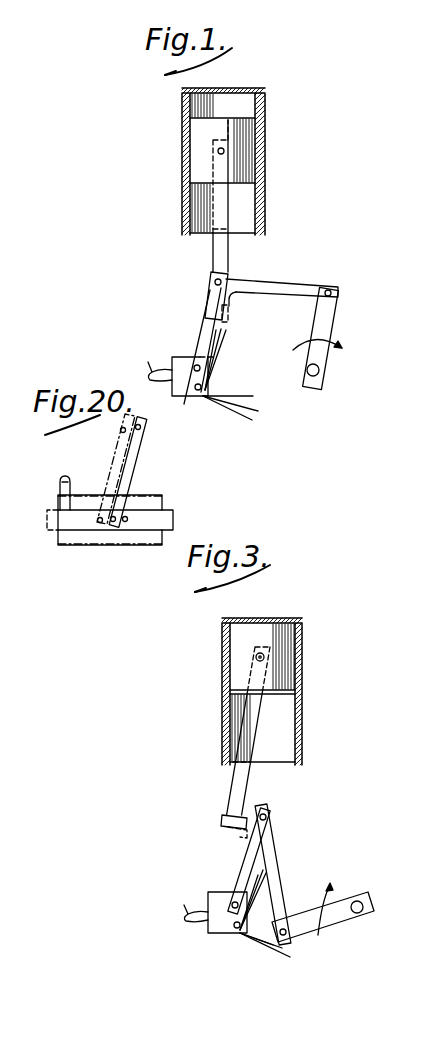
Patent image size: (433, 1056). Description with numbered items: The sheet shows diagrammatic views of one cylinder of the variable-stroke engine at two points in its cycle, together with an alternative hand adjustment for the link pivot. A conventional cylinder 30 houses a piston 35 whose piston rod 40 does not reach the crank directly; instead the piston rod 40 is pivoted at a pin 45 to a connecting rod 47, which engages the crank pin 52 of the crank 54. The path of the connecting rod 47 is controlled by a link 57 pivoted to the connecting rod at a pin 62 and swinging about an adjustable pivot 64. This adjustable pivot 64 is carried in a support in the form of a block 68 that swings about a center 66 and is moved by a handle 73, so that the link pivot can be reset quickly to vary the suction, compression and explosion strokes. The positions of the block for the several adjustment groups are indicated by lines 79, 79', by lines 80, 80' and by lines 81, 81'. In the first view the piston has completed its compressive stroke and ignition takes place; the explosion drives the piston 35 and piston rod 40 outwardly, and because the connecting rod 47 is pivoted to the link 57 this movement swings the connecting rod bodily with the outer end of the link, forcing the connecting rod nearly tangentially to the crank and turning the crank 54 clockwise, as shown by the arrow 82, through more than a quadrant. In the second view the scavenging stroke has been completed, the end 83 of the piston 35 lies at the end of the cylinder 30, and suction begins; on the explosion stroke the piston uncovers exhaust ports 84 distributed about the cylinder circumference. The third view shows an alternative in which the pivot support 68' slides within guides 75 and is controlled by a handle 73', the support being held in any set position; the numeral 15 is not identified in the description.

In FIG. 1, the cylinder 30 is at (258, 100).
In FIG. 3, the cylinder 30 is at (296, 702).
In FIG. 1, the piston 35 is at (245, 148).
In FIG. 3, the piston 35 is at (300, 656).
In FIG. 1, the exhaust ports 84 is at (258, 186).
In FIG. 3, the exhaust ports 84 is at (300, 718).
In FIG. 1, the piston rod 40 is at (214, 250).
In FIG. 3, the piston rod 40 is at (238, 772).
In FIG. 1, the pin 62 is at (212, 285).
In FIG. 3, the pin 62 is at (268, 817).
In FIG. 1, the connecting rod 47 is at (276, 283).
In FIG. 3, the connecting rod 47 is at (277, 862).
In FIG. 1, the pin 45 is at (229, 312).
In FIG. 3, the pin 45 is at (228, 827).
In FIG. 1, the crank pin 52 is at (335, 291).
In FIG. 3, the crank pin 52 is at (292, 938).
In FIG. 1, the crank 54 is at (325, 320).
In FIG. 3, the crank 54 is at (312, 920).
In FIG. 1, the arrows 82 is at (309, 356).
In FIG. 3, the arrows 82 is at (337, 895).
In FIG. 1, the link 57 is at (207, 333).
In FIG. 3, the link 57 is at (250, 855).
In FIG. 1, the block 68 is at (184, 368).
In FIG. 3, the block 68 is at (215, 926).
In FIG. 1, the handle 73 is at (151, 363).
In FIG. 3, the handle 73 is at (183, 900).
In FIG. 1, the adjustable pivot 64 is at (184, 393).
In FIG. 3, the adjustable pivot 64 is at (233, 898).
In FIG. 1, the pivot point 66 is at (199, 393).
In FIG. 3, the pivot point 66 is at (238, 935).
In FIG. 1, the line 79 is at (232, 360).
In FIG. 3, the line 79 is at (249, 902).
In FIG. 1, the line 80 is at (231, 359).
In FIG. 3, the line 80 is at (278, 880).
In FIG. 1, the line 81 is at (228, 362).
In FIG. 3, the line 81 is at (281, 899).
In FIG. 1, the line 79' is at (245, 388).
In FIG. 3, the line 79' is at (256, 965).
In FIG. 1, the line 80' is at (246, 408).
In FIG. 3, the line 80' is at (266, 971).
In FIG. 1, the line 81' is at (247, 419).
In FIG. 3, the line 81' is at (284, 970).
In FIG. 3, the end of piston 83 is at (276, 618).
In FIG. 20, the pivot support 68' is at (133, 516).
In FIG. 20, the guides 75 is at (148, 500).
In FIG. 20, the lever 15 is at (122, 470).
In FIG. 20, the handle 73' is at (79, 476).